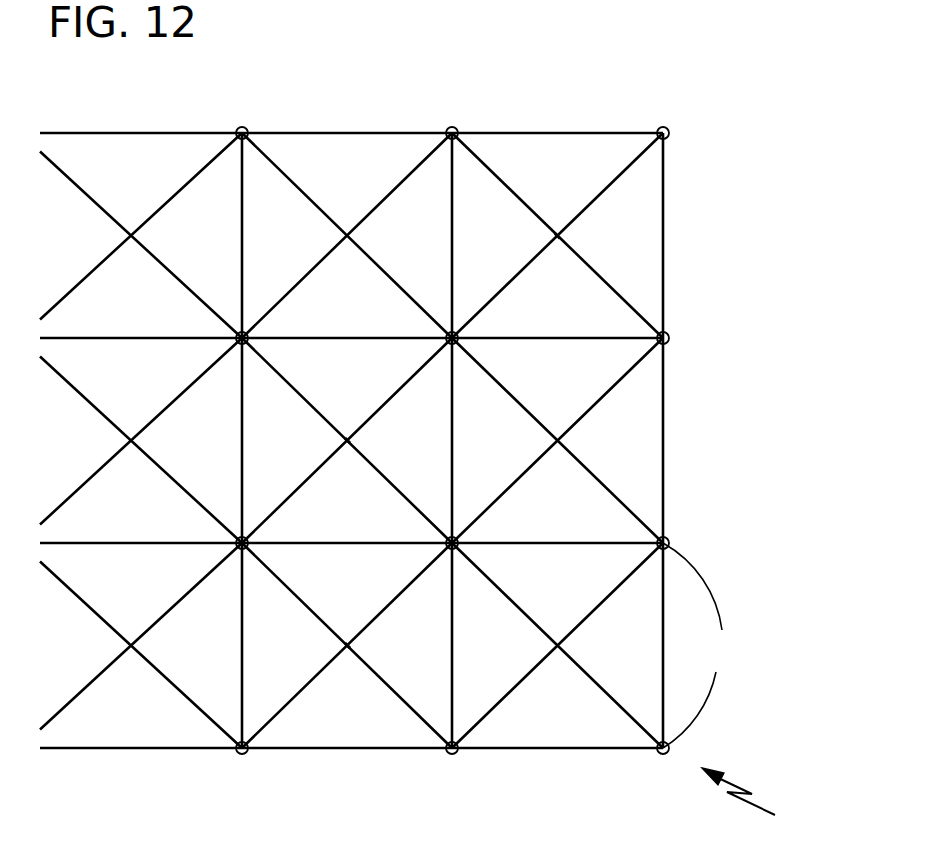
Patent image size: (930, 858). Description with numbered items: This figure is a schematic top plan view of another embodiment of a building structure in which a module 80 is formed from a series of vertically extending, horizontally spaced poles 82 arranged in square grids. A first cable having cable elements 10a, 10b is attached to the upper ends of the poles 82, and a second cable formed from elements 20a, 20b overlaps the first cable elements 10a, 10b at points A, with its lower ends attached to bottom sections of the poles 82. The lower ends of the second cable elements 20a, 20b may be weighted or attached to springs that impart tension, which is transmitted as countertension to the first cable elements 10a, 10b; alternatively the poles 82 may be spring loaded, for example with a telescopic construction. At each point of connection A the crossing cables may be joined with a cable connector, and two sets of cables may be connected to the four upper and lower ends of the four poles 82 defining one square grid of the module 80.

The first cable element 10a is at (488, 303).
The first cable element 10b is at (623, 172).
The second cable element 20a is at (603, 273).
The second cable element 20b is at (508, 183).
The point of connection A is at (559, 245).
The pole 82 is at (700, 645).
The module 80 is at (757, 803).